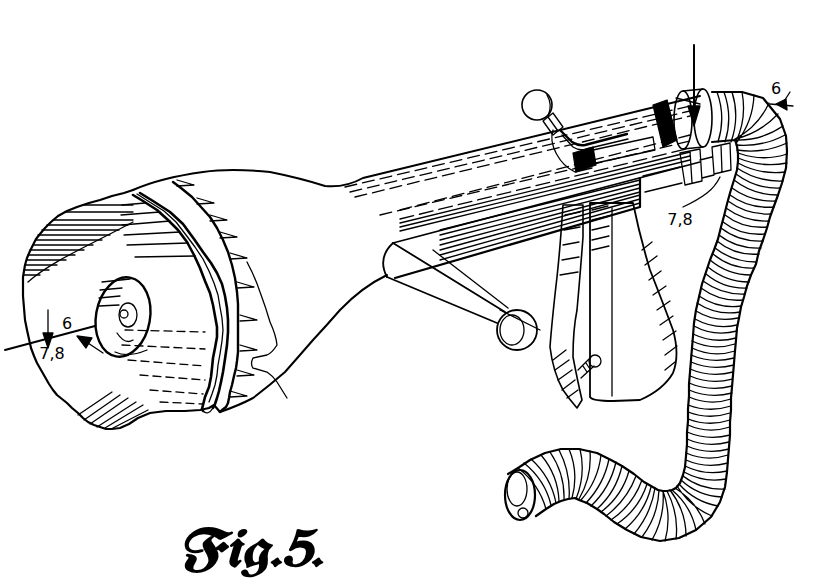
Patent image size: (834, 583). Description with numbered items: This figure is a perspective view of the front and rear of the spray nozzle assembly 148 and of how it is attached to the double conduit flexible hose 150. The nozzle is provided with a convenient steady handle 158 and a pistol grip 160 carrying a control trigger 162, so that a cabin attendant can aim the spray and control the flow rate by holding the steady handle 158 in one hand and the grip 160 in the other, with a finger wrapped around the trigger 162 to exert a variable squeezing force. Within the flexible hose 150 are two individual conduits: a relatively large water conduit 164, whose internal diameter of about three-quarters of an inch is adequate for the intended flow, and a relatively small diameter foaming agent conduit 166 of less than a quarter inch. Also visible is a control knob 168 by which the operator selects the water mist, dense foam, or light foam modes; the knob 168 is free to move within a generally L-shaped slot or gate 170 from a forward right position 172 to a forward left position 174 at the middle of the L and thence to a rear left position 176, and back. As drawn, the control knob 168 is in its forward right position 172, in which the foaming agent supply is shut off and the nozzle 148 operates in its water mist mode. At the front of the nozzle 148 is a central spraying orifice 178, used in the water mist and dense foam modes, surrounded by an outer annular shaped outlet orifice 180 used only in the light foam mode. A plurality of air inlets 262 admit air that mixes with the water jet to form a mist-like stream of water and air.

The spray nozzle assembly 148 is at (221, 127).
The double conduit flexible hose 150 is at (714, 507).
The steady handle 158 is at (468, 300).
The pistol grip 160 is at (647, 363).
The control trigger 162 is at (553, 372).
The water conduit 164 is at (516, 483).
The foaming agent conduit 166 is at (526, 516).
The control knob 168 is at (523, 103).
The L-shaped slot or gate 170 is at (580, 137).
The forward right position 172 is at (567, 118).
The forward left position 174 is at (580, 187).
The rear left position 176 is at (625, 137).
The central spraying orifice 178 is at (110, 357).
The outer annular shaped outlet orifice 180 is at (34, 251).
The air inlets 262 is at (253, 318).